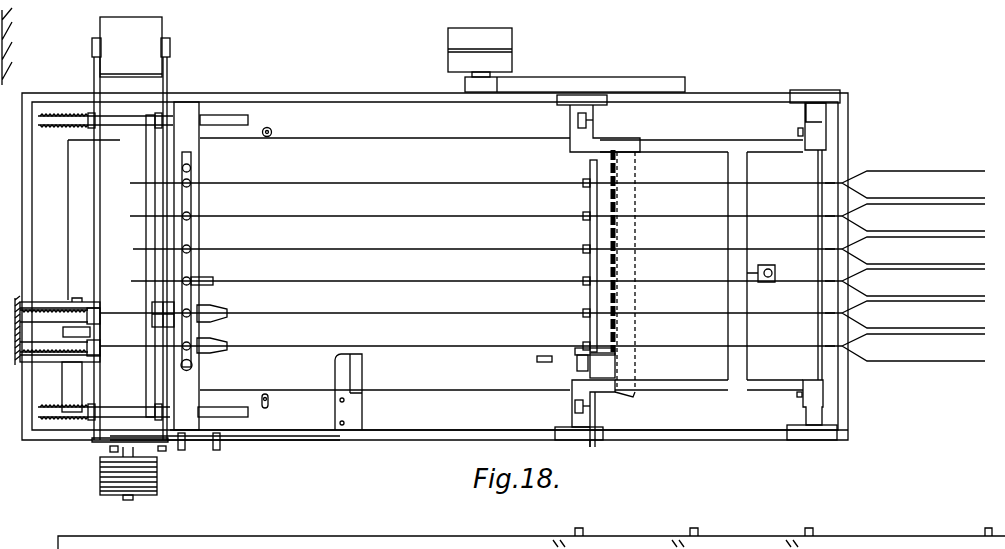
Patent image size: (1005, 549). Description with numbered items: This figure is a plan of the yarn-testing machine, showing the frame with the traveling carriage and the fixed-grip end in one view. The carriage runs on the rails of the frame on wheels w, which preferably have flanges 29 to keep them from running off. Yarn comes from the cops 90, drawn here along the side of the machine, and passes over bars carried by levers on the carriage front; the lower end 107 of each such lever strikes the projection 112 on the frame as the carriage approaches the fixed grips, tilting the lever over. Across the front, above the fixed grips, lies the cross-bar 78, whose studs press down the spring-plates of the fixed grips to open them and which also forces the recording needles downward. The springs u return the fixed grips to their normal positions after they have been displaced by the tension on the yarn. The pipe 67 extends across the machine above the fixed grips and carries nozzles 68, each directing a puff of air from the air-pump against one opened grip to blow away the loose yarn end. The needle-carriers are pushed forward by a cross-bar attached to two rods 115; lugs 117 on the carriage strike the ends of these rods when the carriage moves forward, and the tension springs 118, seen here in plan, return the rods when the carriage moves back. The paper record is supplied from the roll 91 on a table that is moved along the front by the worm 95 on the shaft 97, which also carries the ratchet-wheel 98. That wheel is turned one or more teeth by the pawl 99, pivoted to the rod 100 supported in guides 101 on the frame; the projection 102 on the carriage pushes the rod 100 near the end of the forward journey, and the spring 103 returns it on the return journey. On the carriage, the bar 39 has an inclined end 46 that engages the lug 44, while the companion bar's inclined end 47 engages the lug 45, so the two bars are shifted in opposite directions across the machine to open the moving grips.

The roll 91 is at (131, 229).
The springs 118 is at (88, 118).
The rods 115 is at (241, 113).
The lug 45 is at (270, 128).
The cross-bar 78 is at (190, 386).
The pipe 67 is at (192, 231).
The nozzles 68 is at (213, 279).
The springs u is at (45, 304).
The lug 44 is at (270, 396).
The projection 112 is at (355, 378).
The wheels w is at (595, 95).
The inclined end 47 is at (630, 137).
The lugs 117 is at (576, 124).
The flanges 29 is at (598, 426).
The bar 39 is at (622, 366).
The lower end of lever 107 is at (548, 358).
The inclined end 46 is at (622, 393).
The projection 102 is at (600, 445).
The cops 90 is at (905, 266).
The spring 103 is at (250, 441).
The ratchet-wheel 98 is at (108, 450).
The pawl 99 is at (176, 450).
The rod 100 is at (218, 450).
The guides 101 is at (184, 452).
The worm 95 is at (158, 480).
The shaft 97 is at (130, 500).